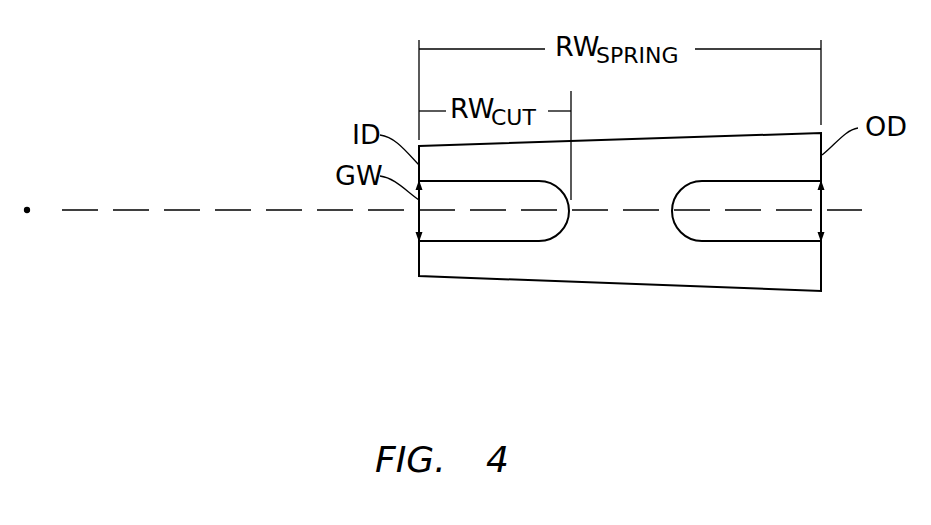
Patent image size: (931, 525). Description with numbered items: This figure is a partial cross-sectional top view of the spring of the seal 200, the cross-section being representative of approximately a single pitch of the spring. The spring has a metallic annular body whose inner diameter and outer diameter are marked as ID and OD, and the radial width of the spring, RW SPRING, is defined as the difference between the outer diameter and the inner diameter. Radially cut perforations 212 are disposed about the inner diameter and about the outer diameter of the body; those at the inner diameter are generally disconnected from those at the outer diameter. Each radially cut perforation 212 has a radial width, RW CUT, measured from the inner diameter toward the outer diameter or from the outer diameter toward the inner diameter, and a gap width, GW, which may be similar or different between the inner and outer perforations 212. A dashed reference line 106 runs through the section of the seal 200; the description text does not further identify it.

The central axis 106 is at (35, 208).
The seal 200 is at (652, 126).
The radially cut perforations 212 is at (620, 211).